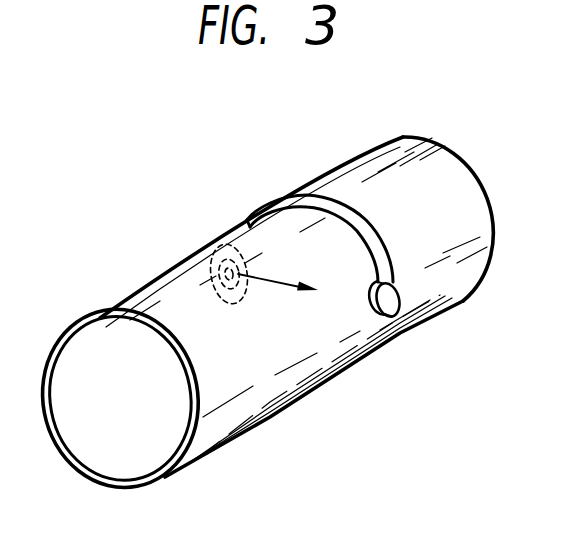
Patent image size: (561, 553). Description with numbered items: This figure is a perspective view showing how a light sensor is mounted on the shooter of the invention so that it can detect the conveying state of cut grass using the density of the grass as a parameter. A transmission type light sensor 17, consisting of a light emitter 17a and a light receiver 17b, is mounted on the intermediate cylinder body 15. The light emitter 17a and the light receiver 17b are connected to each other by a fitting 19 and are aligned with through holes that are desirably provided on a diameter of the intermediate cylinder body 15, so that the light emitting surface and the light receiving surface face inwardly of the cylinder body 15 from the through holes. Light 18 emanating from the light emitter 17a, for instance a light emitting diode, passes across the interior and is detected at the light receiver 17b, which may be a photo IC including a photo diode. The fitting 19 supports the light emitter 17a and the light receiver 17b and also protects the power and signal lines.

The intermediate cylinder body 15 is at (299, 371).
The transmission type light sensor 17 is at (243, 215).
The light emitter 17a is at (221, 268).
The light receiver 17b is at (390, 303).
The light 18 is at (273, 284).
The fitting 19 is at (335, 207).